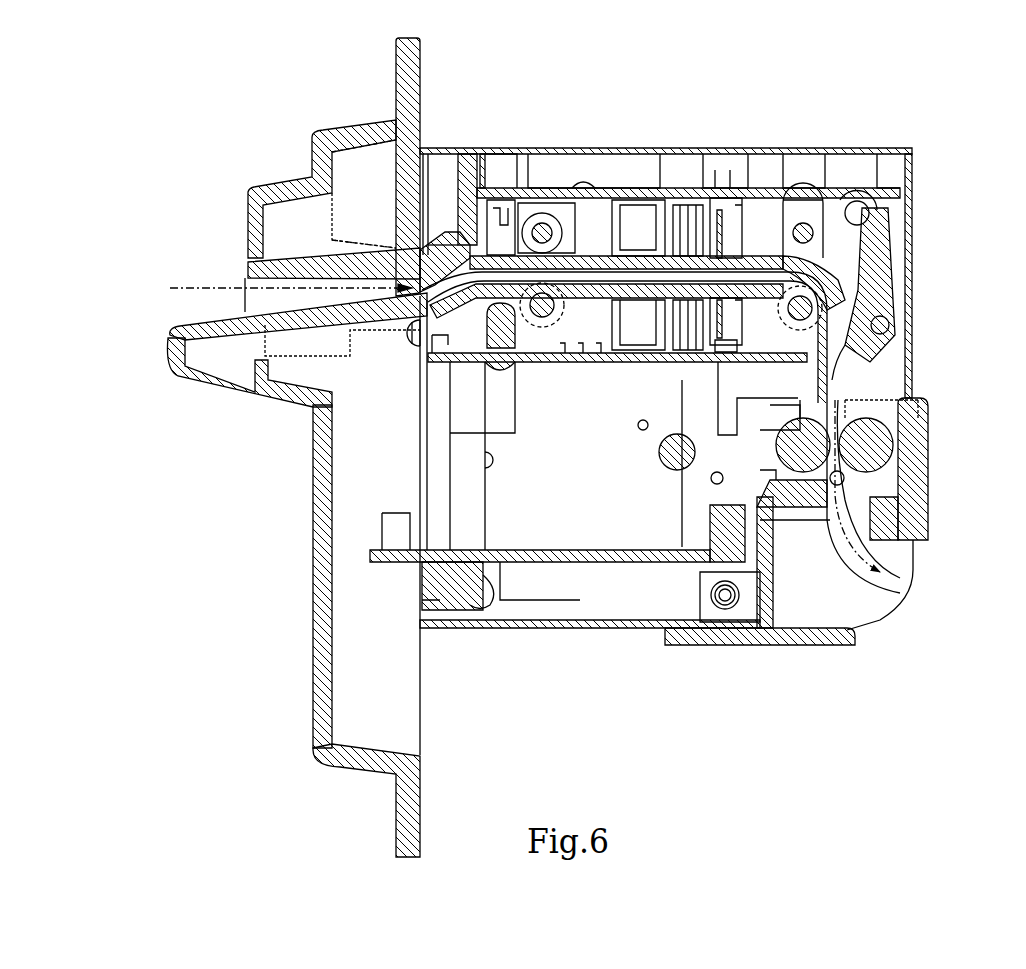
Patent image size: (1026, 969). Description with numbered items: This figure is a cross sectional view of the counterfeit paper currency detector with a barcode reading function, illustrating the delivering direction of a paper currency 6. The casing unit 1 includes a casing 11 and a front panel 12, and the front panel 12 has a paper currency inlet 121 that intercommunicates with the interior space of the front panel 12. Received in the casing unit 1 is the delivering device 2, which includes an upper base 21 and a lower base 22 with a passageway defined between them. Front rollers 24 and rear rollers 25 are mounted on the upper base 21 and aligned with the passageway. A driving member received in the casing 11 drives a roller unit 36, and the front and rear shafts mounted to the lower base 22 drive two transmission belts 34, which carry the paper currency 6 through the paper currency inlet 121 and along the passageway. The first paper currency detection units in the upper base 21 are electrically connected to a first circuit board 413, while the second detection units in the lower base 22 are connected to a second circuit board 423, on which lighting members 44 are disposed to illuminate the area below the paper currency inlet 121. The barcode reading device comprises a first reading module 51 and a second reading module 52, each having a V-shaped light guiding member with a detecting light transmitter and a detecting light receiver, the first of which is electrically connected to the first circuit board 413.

The casing unit 1 is at (920, 150).
The delivering device 2 is at (437, 200).
The paper currency 6 is at (218, 288).
The casing 11 is at (477, 150).
The front panel 12 is at (326, 522).
The upper base 21 is at (405, 111).
The lower base 22 is at (583, 298).
The front rollers 24 is at (543, 205).
The rear rollers 25 is at (850, 255).
The transmission belts 34 is at (832, 294).
The roller unit 36 is at (888, 444).
The lighting members 44 is at (410, 343).
The first reading module 51 is at (738, 232).
The second reading module 52 is at (740, 332).
The paper currency inlet 121 is at (242, 266).
The first circuit board 413 is at (622, 188).
The second circuit board 423 is at (676, 364).